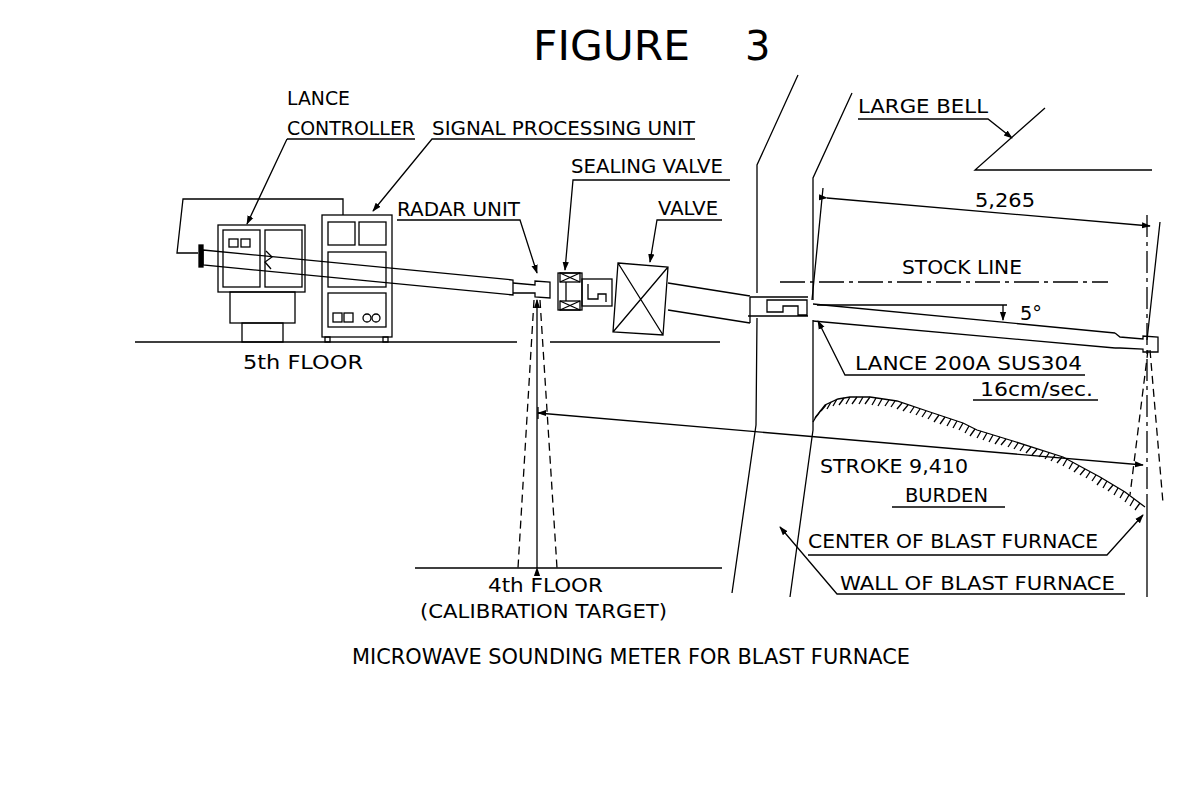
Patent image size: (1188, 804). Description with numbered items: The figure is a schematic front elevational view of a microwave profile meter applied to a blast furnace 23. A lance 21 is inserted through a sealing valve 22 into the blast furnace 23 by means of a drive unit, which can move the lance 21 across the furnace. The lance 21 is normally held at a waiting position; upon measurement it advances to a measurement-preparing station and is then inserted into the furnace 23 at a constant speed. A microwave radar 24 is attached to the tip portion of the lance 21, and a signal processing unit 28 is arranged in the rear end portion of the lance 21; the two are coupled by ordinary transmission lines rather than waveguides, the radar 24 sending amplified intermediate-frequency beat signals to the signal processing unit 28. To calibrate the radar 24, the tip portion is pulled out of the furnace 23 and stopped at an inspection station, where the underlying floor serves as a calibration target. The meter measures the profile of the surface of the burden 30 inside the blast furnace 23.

The lance 21 is at (444, 288).
The sealing valve 22 is at (569, 274).
The blast furnace 23 is at (1065, 150).
The microwave radar 24 is at (528, 277).
The signal processing unit 28 is at (241, 224).
The burden 30 is at (979, 455).